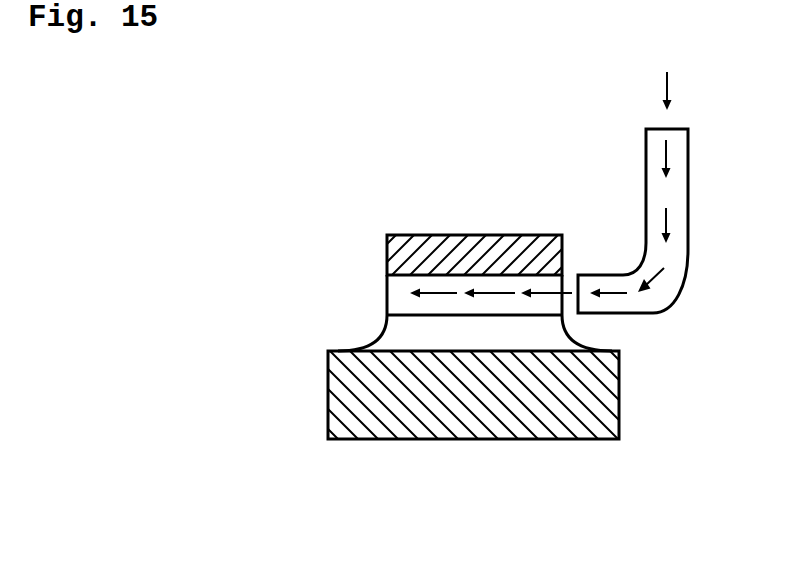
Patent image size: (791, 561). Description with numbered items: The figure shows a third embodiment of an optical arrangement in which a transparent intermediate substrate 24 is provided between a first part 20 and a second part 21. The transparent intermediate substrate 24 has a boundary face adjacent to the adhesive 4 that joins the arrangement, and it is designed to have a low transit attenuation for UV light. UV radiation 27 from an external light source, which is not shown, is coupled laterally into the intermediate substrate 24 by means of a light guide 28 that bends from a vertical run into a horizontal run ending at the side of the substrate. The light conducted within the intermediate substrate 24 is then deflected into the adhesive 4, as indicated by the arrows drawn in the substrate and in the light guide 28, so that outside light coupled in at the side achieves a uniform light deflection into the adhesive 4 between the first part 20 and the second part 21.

The first part 20 is at (473, 250).
The transparent intermediate substrate 24 is at (398, 295).
The adhesive 4 is at (375, 337).
The second part 21 is at (468, 427).
The light guide 28 is at (628, 257).
The UV radiation 27 is at (666, 73).